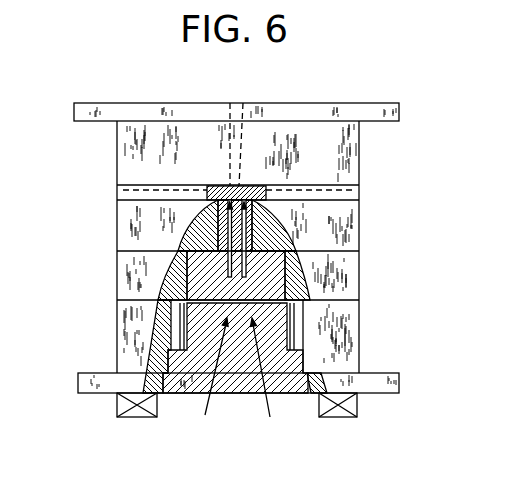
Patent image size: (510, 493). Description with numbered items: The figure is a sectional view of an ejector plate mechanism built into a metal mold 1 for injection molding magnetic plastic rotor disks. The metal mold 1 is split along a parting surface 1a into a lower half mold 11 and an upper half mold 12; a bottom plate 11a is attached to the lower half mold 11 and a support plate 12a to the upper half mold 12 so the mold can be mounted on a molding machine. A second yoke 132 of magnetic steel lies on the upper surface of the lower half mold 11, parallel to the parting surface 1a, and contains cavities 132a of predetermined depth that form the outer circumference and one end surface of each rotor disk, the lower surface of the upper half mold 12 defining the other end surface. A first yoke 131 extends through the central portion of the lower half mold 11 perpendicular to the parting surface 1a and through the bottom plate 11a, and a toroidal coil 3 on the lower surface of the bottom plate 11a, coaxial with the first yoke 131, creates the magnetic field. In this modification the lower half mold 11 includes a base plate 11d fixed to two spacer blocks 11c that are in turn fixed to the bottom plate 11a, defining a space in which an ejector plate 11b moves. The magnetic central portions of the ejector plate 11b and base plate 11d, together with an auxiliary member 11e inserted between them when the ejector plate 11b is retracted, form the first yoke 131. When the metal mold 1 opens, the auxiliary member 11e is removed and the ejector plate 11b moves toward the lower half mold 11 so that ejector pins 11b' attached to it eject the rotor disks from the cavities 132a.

The metal mold 1 is at (372, 212).
The parting surface 1a is at (330, 178).
The toroidal coil 3 is at (357, 408).
The lower half mold 11 is at (360, 268).
The bottom plate 11a is at (393, 385).
The ejector plate 11b is at (235, 377).
The ejector pins 11b' is at (393, 322).
The spacer blocks 11c is at (128, 338).
The base plate 11d is at (128, 282).
The auxiliary member 11e is at (273, 314).
The upper half mold 12 is at (360, 137).
The support plate 12a is at (390, 112).
The first yoke 131 is at (218, 233).
The second yoke 132 is at (123, 192).
The cavities 132a is at (180, 190).